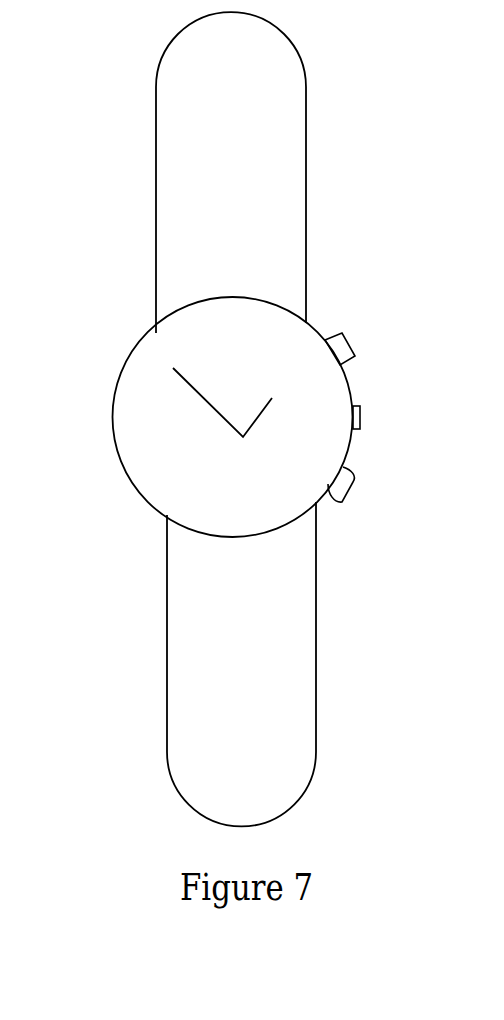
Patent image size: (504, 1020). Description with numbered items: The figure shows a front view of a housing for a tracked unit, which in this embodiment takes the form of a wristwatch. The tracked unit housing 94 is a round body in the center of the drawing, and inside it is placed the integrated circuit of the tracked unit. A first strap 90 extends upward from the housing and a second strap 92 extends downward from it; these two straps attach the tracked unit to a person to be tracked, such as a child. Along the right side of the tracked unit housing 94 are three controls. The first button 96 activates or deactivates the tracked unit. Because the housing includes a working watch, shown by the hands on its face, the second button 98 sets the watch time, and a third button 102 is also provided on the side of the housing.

The first strap 90 is at (180, 127).
The second strap 92 is at (200, 662).
The tracked unit housing 94 is at (158, 443).
The first button 96 is at (338, 349).
The second button 98 is at (357, 416).
The third button 102 is at (338, 477).